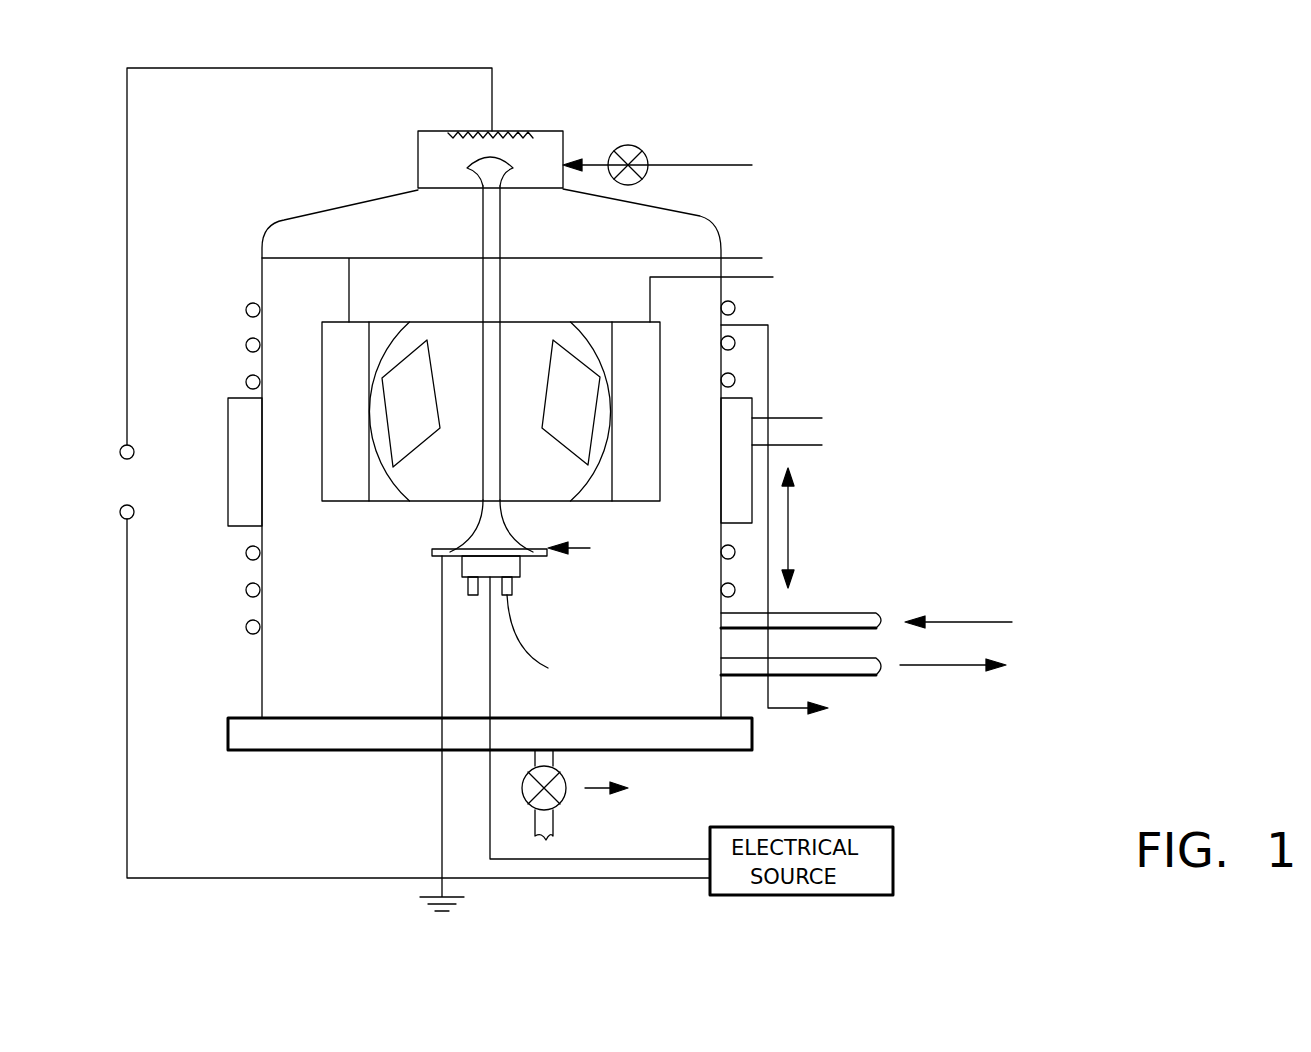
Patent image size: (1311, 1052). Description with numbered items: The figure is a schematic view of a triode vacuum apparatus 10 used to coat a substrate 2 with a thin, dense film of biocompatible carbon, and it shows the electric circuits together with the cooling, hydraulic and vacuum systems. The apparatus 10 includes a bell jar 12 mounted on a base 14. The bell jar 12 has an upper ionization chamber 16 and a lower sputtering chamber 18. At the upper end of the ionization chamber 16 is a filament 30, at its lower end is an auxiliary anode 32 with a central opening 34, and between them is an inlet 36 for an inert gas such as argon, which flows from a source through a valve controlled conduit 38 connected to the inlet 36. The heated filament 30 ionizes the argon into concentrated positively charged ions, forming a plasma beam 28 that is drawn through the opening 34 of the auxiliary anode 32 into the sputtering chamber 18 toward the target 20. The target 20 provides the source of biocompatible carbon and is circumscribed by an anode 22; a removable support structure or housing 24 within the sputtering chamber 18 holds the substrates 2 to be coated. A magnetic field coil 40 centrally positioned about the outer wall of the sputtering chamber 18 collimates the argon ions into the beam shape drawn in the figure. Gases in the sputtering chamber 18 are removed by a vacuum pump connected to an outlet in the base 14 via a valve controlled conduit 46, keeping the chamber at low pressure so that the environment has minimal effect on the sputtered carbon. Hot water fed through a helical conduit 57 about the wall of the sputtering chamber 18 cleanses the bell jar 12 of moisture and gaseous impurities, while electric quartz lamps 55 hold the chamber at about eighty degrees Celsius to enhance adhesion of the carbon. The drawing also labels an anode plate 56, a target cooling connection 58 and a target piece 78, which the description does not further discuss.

The substrate 2 is at (561, 385).
The triode vacuum apparatus 10 is at (335, 148).
The bell jar 12 is at (273, 222).
The base 14 is at (243, 732).
The ionization chamber 16 is at (552, 143).
The sputtering chamber 18 is at (721, 245).
The target 20 is at (508, 562).
The anode 22 is at (503, 550).
The support structure or housing 24 is at (584, 323).
The plasma beam 28 is at (493, 247).
The filament 30 is at (517, 132).
The auxiliary anode 32 is at (448, 190).
The central opening 34 is at (502, 192).
The inlet 36 is at (578, 160).
The valve controlled conduit 38 is at (720, 162).
The magnetic field coil 40 is at (240, 468).
The valve controlled conduit 46 is at (548, 820).
The electric quartz lamps 55 is at (347, 485).
The anode plate 56 is at (443, 553).
The helical conduit 57 is at (815, 622).
The target cooling conduit 58 is at (473, 595).
The target 78 is at (387, 323).